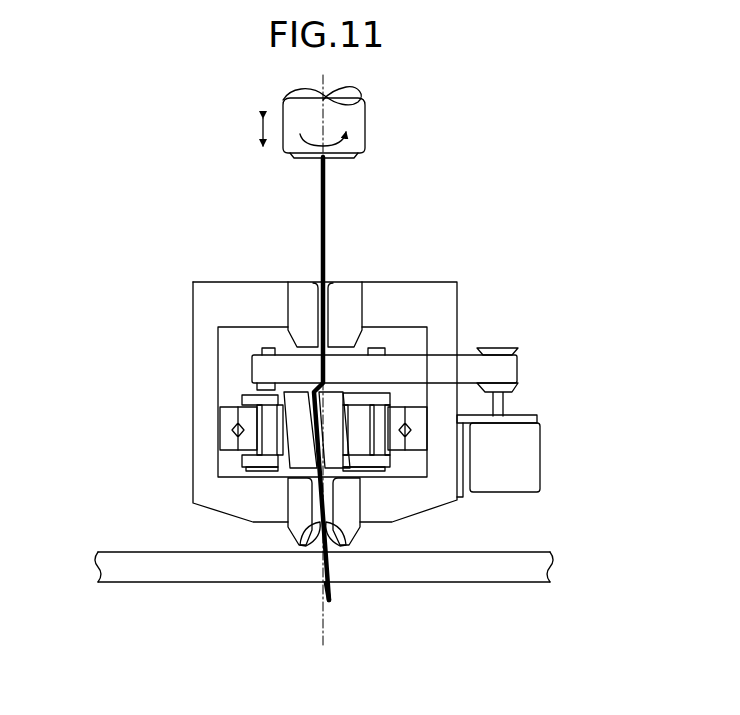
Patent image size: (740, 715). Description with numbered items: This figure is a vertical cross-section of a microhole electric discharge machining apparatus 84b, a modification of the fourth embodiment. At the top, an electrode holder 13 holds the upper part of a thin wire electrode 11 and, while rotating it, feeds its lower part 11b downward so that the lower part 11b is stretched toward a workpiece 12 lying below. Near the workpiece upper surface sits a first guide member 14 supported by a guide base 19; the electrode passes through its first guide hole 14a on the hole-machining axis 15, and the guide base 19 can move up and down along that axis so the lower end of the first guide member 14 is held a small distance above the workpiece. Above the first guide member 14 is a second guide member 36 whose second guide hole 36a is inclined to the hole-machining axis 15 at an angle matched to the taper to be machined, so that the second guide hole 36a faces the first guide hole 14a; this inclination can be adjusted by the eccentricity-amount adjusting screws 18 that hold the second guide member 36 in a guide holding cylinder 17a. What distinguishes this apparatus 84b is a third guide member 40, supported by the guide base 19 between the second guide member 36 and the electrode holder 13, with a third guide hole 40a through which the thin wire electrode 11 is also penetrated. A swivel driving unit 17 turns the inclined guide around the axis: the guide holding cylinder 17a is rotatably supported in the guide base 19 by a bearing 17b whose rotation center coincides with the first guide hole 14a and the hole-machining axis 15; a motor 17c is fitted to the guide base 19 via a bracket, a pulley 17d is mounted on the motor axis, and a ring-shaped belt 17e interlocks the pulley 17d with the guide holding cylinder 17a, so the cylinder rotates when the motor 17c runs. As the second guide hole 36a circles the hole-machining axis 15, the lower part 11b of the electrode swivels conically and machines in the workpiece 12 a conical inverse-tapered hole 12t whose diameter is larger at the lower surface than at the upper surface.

The thin wire electrode 11 is at (319, 187).
The lower part 11b is at (335, 588).
The workpiece 12 is at (324, 599).
The inverse-tapered hole 12t is at (318, 586).
The electrode holder 13 is at (366, 125).
The first guide member 14 is at (340, 547).
The first guide hole 14a is at (313, 552).
The hole-machining axis 15 is at (325, 611).
The swivel driving unit 17 is at (502, 243).
The guide holding cylinder 17a is at (381, 355).
The bearing 17b is at (418, 416).
The motor 17c is at (541, 453).
The pulley 17d is at (423, 314).
The ring-shaped belt 17e is at (467, 351).
The eccentricity-amount adjusting screws 18 is at (236, 401).
The guide base 19 is at (205, 488).
The second guide member 36 is at (257, 431).
The second guide hole 36a is at (295, 421).
The third guide member 40 is at (313, 290).
The third guide hole 40a is at (291, 256).
The microhole electric discharge machining apparatus 84b is at (482, 166).